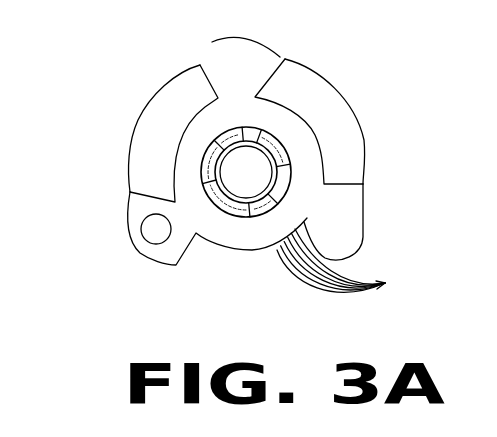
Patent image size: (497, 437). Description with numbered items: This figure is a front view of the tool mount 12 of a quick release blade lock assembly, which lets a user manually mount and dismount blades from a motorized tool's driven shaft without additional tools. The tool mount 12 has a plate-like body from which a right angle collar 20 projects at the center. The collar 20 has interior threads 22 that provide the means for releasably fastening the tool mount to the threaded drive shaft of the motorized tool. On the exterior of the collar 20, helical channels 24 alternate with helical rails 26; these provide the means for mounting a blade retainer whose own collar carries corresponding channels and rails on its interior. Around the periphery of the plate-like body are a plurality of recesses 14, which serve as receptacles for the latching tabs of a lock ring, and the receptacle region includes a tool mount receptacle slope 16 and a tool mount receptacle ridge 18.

The tool mount 12 is at (363, 240).
The tool mount recess 14 is at (165, 124).
The tool mount receptacle slope 16 is at (293, 278).
The tool mount receptacle ridge 18 is at (386, 283).
The tool mount collar 20 is at (249, 209).
The tool mount collar interior threads 22 is at (247, 142).
The tool mount collar exterior channel 24 is at (263, 137).
The tool mount collar exterior rail 26 is at (249, 142).